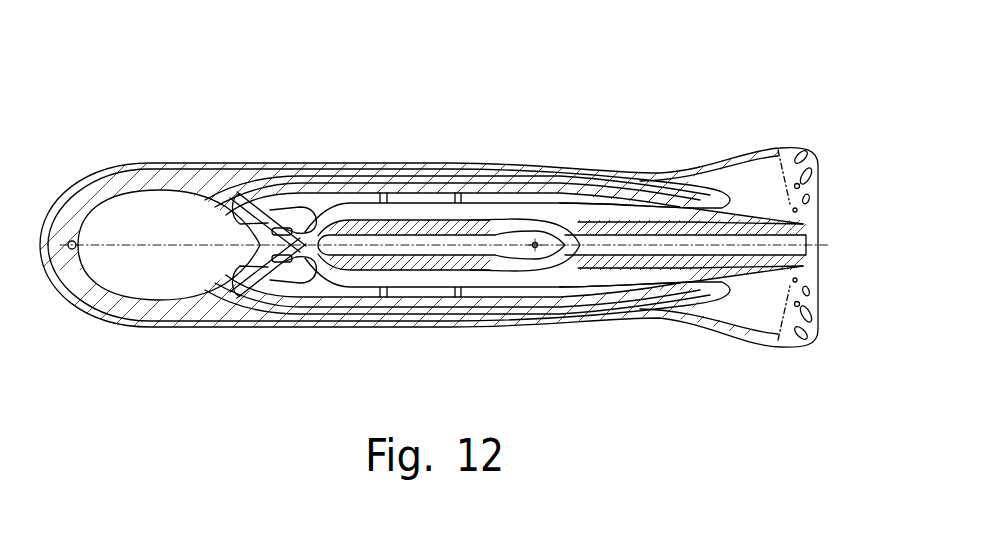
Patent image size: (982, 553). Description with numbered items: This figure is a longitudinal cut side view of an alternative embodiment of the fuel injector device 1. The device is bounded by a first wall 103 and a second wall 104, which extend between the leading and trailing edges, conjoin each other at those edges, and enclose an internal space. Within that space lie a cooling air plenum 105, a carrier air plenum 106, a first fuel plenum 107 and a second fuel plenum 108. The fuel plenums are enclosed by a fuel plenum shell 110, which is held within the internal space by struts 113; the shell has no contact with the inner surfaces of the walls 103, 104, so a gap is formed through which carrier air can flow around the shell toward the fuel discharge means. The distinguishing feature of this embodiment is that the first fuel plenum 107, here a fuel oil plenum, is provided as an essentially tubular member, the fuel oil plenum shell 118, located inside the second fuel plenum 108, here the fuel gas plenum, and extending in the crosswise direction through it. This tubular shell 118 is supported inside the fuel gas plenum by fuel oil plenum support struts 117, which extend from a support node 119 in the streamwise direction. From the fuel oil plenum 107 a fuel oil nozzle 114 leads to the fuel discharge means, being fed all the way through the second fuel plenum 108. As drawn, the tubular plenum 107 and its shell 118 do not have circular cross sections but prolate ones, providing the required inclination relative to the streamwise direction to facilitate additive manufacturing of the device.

The fuel injector device 1 is at (665, 103).
The first wall 103 is at (172, 167).
The second wall 104 is at (190, 313).
The cooling air plenum 105 is at (188, 256).
The carrier air plenum 106 is at (283, 265).
The fuel plenum 107 is at (532, 247).
The fuel plenum 108 is at (417, 260).
The fuel plenum shell 110 is at (437, 285).
The strut 113 is at (270, 200).
The fuel oil nozzle 114 is at (648, 248).
The fuel oil plenum support strut 117 is at (410, 243).
The fuel oil plenum shell 118 is at (503, 260).
The support node 119 is at (325, 215).